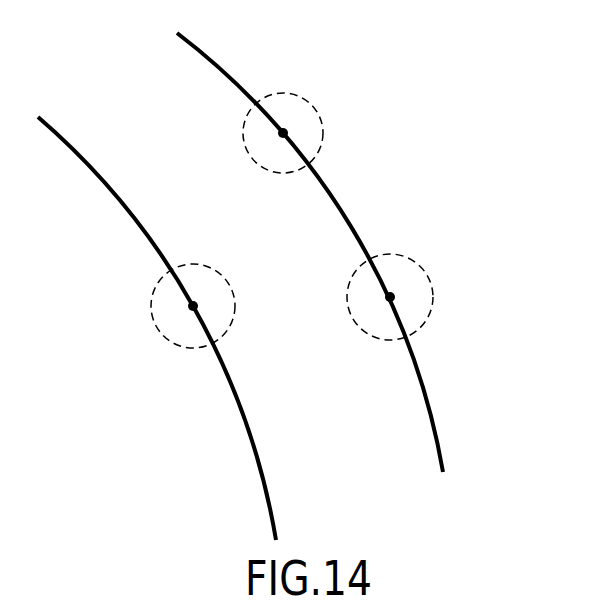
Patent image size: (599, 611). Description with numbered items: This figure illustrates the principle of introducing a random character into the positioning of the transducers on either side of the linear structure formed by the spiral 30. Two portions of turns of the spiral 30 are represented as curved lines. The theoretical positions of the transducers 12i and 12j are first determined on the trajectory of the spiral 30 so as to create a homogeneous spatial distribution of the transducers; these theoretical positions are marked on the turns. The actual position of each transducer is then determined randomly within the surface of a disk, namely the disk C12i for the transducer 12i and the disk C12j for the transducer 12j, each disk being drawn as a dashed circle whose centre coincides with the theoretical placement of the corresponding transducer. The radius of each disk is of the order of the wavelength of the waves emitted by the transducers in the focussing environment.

The spiral 30 is at (200, 54).
The transducer 12i is at (290, 134).
The transducer 12j is at (193, 308).
The disk C12i is at (277, 173).
The disk C12j is at (194, 264).